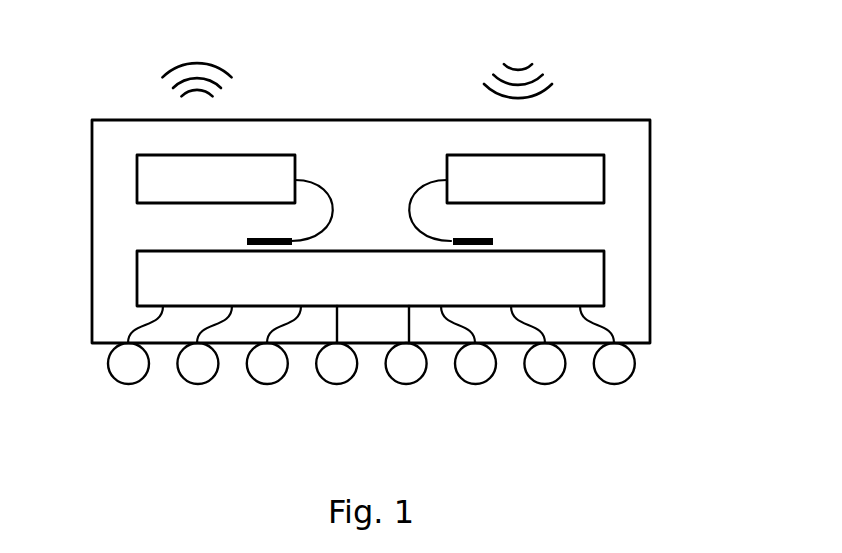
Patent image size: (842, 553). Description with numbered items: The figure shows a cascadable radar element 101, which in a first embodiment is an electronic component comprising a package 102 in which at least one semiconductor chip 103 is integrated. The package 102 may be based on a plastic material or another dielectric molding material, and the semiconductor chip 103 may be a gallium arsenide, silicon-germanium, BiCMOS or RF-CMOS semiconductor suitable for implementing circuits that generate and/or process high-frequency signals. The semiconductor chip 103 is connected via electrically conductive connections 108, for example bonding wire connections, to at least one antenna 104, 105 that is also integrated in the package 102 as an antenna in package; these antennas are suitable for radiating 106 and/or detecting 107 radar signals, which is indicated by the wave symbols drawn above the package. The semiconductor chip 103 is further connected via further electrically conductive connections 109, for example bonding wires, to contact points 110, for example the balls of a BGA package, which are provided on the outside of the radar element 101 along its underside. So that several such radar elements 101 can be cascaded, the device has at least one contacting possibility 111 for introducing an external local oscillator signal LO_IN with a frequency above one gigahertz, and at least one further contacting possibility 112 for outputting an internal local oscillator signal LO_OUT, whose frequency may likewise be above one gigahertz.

The radar element 101 is at (652, 171).
The package 102 is at (630, 237).
The semiconductor chip 103 is at (604, 290).
The antenna 104 is at (162, 154).
The antenna 105 is at (590, 154).
The radiating 106 is at (163, 75).
The detecting 107 is at (547, 62).
The electrically conductive connections 108 is at (408, 208).
The further electrically conductive connections 109 is at (341, 315).
The contact points 110 is at (457, 376).
The contacting possibility 111 is at (100, 367).
The further contacting possibility 112 is at (635, 372).